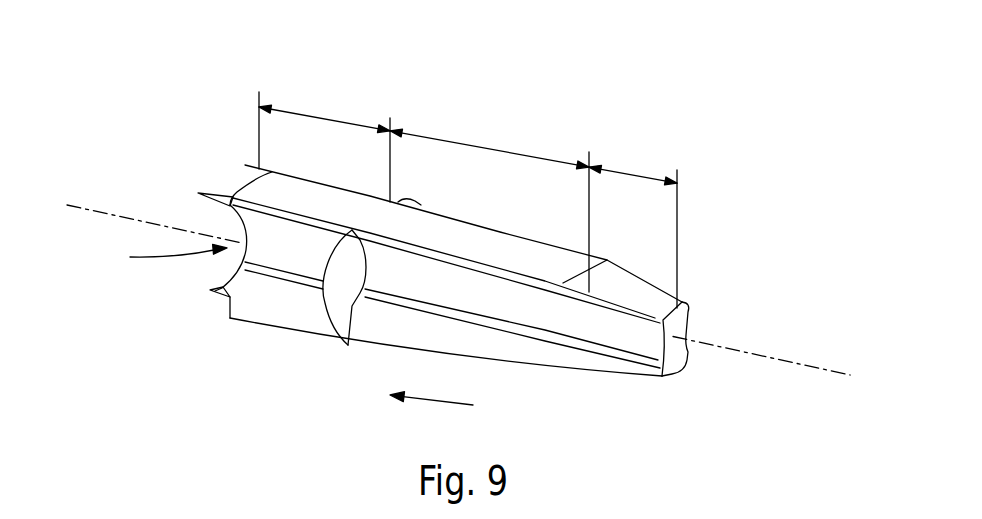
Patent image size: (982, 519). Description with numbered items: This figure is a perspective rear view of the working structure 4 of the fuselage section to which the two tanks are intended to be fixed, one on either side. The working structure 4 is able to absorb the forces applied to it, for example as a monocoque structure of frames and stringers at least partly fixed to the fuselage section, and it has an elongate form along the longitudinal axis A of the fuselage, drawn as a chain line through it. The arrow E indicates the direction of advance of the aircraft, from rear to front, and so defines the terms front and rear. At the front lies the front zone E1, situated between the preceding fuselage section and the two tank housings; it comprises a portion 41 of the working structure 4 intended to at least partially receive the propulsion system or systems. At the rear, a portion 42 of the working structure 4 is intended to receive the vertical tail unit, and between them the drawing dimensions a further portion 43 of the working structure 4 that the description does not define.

The working structure 4 is at (328, 358).
The portion of the working structure 41 is at (327, 113).
The portion of the working structure 42 is at (633, 173).
The middle section 43 is at (497, 150).
The longitudinal axis A is at (126, 218).
The arrow E is at (431, 387).
The front zone E1 is at (162, 256).